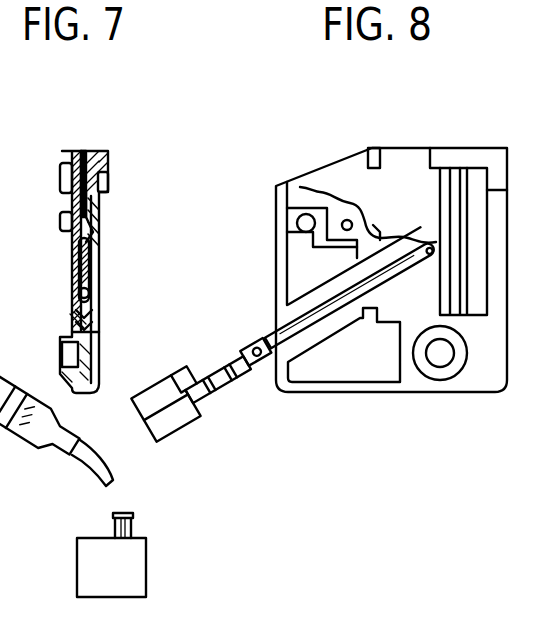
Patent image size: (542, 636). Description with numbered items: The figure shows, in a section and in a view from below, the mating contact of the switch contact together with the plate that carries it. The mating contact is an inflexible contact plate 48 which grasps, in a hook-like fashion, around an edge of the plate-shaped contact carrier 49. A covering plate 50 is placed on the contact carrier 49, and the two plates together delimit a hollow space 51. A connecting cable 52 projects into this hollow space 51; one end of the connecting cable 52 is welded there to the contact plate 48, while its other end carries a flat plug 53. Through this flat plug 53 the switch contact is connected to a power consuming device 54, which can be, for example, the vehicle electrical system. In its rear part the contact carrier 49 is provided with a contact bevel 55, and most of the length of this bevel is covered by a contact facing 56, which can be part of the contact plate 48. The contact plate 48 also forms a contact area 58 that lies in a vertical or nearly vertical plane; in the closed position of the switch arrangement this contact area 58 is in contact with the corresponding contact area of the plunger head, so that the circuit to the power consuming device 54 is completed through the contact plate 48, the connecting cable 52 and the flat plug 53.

In FIG. 7, the contact plate 48 is at (73, 203).
In FIG. 8, the contact plate 48 is at (420, 247).
In FIG. 7, the contact carrier 49 is at (94, 206).
In FIG. 8, the contact carrier 49 is at (467, 386).
In FIG. 7, the covering plate 50 is at (62, 160).
In FIG. 8, the covering plate 50 is at (405, 168).
In FIG. 7, the hollow space 51 is at (79, 265).
In FIG. 8, the hollow space 51 is at (413, 293).
In FIG. 8, the connecting cable 52 is at (260, 362).
In FIG. 7, the flat plug 53 is at (56, 410).
In FIG. 8, the flat plug 53 is at (182, 418).
In FIG. 7, the power consuming device 54 is at (93, 561).
In FIG. 8, the contact bevel 55 is at (330, 166).
In FIG. 8, the contact facing 56 is at (300, 184).
In FIG. 7, the contact area 58 is at (92, 152).